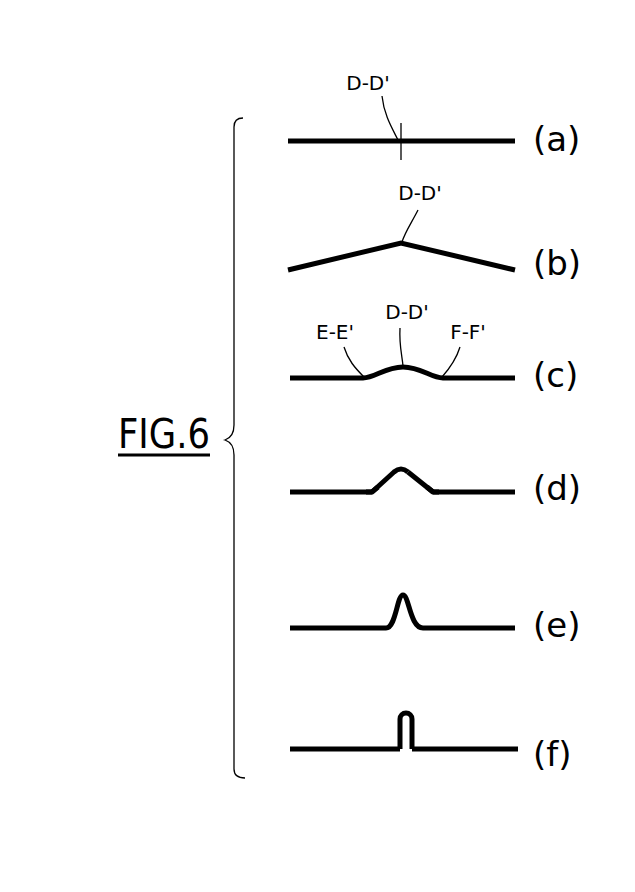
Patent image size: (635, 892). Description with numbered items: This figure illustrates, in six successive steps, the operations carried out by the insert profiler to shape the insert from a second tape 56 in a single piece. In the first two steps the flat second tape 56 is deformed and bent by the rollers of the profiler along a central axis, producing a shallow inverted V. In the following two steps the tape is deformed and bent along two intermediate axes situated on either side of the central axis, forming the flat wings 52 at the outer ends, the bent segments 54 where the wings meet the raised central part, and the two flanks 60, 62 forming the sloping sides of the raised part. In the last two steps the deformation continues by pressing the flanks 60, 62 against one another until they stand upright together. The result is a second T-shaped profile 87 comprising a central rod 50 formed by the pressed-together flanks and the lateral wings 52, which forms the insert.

The second tape 56 is at (305, 140).
The wings 52 is at (315, 380).
The flank 60 is at (376, 381).
The flank 62 is at (423, 381).
The bent segments 54 is at (372, 495).
The rod 50 is at (420, 722).
The second T-shaped profile 87 is at (523, 735).